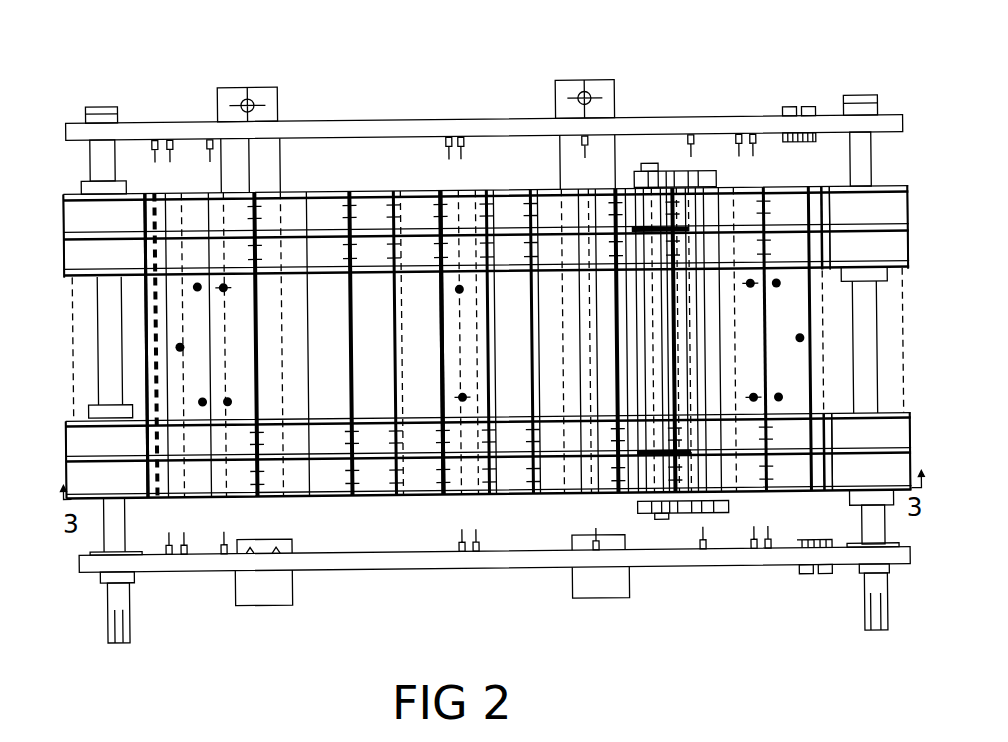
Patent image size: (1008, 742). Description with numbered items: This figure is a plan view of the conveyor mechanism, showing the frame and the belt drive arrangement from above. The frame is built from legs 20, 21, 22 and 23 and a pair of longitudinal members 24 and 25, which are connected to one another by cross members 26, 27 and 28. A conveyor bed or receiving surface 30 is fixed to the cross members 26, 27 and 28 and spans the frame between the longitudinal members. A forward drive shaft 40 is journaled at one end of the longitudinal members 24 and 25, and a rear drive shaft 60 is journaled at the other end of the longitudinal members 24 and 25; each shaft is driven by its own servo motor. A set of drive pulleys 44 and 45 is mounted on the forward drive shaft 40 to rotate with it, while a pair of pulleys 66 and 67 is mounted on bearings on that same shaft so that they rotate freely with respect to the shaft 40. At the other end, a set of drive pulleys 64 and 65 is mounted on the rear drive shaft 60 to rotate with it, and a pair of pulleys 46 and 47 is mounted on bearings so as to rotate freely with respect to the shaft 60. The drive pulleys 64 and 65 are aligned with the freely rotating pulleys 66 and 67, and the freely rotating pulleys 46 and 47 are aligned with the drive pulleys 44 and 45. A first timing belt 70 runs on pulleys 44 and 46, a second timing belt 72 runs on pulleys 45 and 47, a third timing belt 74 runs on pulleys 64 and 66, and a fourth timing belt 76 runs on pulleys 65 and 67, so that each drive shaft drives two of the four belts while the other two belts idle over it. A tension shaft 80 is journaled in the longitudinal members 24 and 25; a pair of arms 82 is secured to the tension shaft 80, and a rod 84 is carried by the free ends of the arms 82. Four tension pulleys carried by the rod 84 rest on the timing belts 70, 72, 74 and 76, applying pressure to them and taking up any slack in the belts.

The leg 20 is at (283, 145).
The leg 21 is at (284, 587).
The leg 22 is at (613, 141).
The leg 23 is at (580, 587).
The longitudinal member 24 is at (498, 130).
The longitudinal member 25 is at (777, 560).
The cross member 26 is at (162, 170).
The cross member 27 is at (452, 170).
The cross member 28 is at (755, 166).
The receiving surface 30 is at (373, 312).
The forward drive shaft 40 is at (114, 592).
The drive pulley 44 is at (89, 450).
The drive pulley 45 is at (79, 226).
The freely rotating pulley 46 is at (854, 450).
The freely rotating pulley 47 is at (854, 223).
The rear drive shaft 60 is at (865, 159).
The drive pulley 64 is at (854, 488).
The drive pulley 65 is at (854, 264).
The freely rotating pulley 66 is at (89, 488).
The freely rotating pulley 67 is at (81, 264).
The first timing belt 70 is at (373, 444).
The second timing belt 72 is at (322, 215).
The third timing belt 74 is at (521, 473).
The fourth timing belt 76 is at (509, 222).
The tension shaft 80 is at (697, 162).
The arm 82 is at (674, 175).
The rod 84 is at (654, 520).